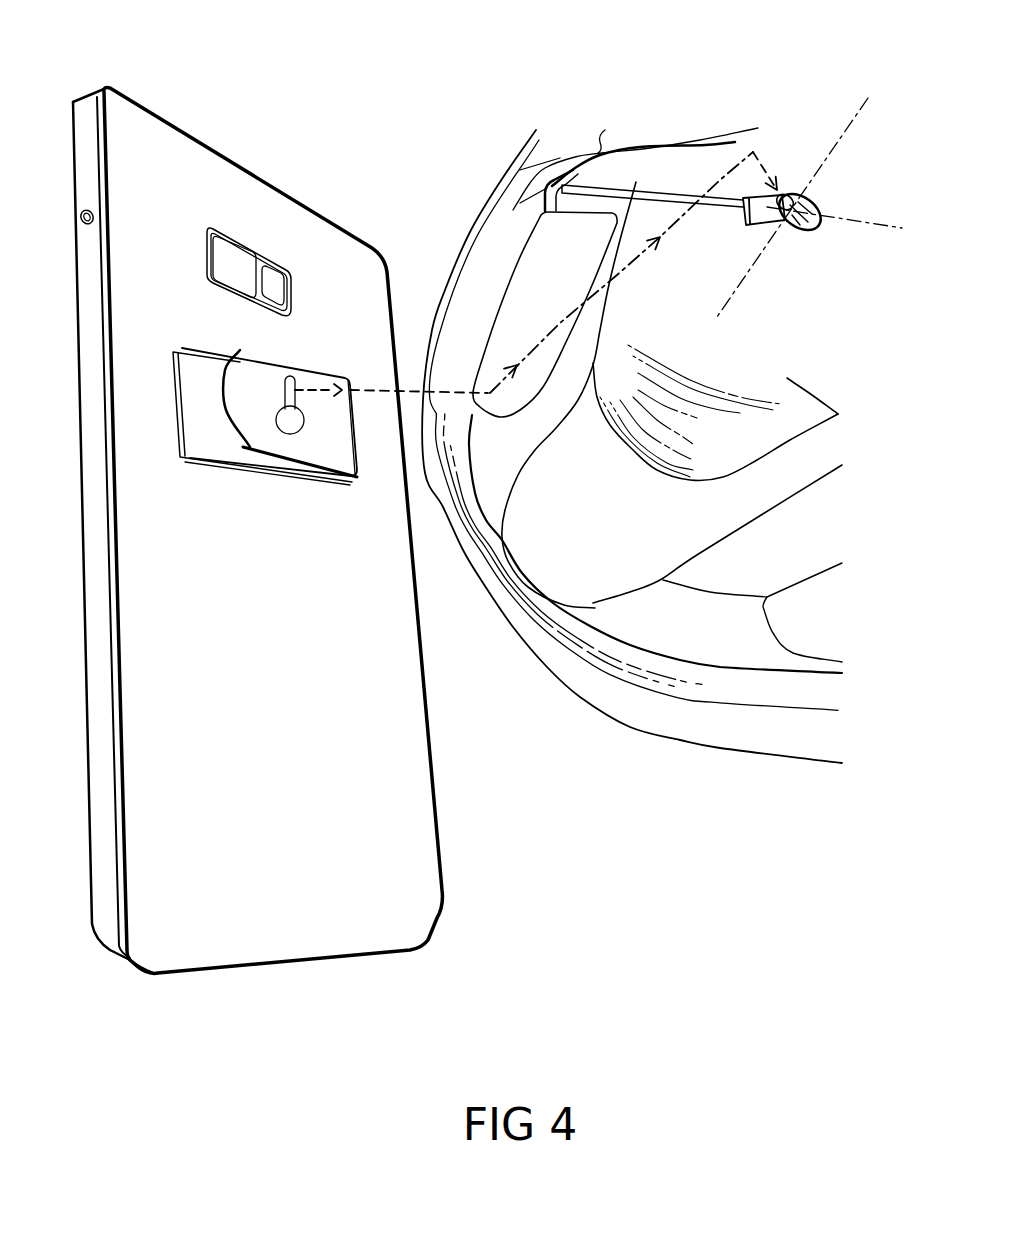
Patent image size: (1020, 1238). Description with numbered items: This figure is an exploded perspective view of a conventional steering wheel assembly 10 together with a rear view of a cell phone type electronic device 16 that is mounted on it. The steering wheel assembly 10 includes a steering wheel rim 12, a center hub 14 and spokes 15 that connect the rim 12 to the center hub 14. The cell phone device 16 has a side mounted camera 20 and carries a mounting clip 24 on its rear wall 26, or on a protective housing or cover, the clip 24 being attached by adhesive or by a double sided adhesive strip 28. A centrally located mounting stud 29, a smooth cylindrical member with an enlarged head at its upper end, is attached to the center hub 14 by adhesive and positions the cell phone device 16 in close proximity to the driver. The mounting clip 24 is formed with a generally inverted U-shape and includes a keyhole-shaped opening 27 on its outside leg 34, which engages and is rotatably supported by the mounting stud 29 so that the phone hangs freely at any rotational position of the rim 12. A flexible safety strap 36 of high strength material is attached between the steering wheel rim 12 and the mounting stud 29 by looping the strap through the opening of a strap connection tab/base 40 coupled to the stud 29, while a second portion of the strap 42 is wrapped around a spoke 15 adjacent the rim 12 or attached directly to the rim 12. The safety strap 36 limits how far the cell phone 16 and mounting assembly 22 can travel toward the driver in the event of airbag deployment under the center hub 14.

The steering wheel assembly 10 is at (503, 131).
The steering wheel rim 12 is at (632, 705).
The center hub 14 is at (838, 414).
The spoke 15 is at (602, 207).
The cell phone type electronic device 16 is at (183, 132).
The side mounted camera 20 is at (82, 207).
The mounting assembly 22 is at (774, 112).
The mounting clip 24 is at (307, 372).
The rear wall 26 is at (280, 603).
The keyhole-shaped opening 27 is at (290, 420).
The double sided adhesive strip 28 is at (170, 363).
The mounting stud 29 is at (806, 200).
The outside leg 34 is at (250, 427).
The safety strap 36 is at (633, 192).
The strap connection tab/base 40 is at (763, 220).
The second portion of the strap 42 is at (552, 186).